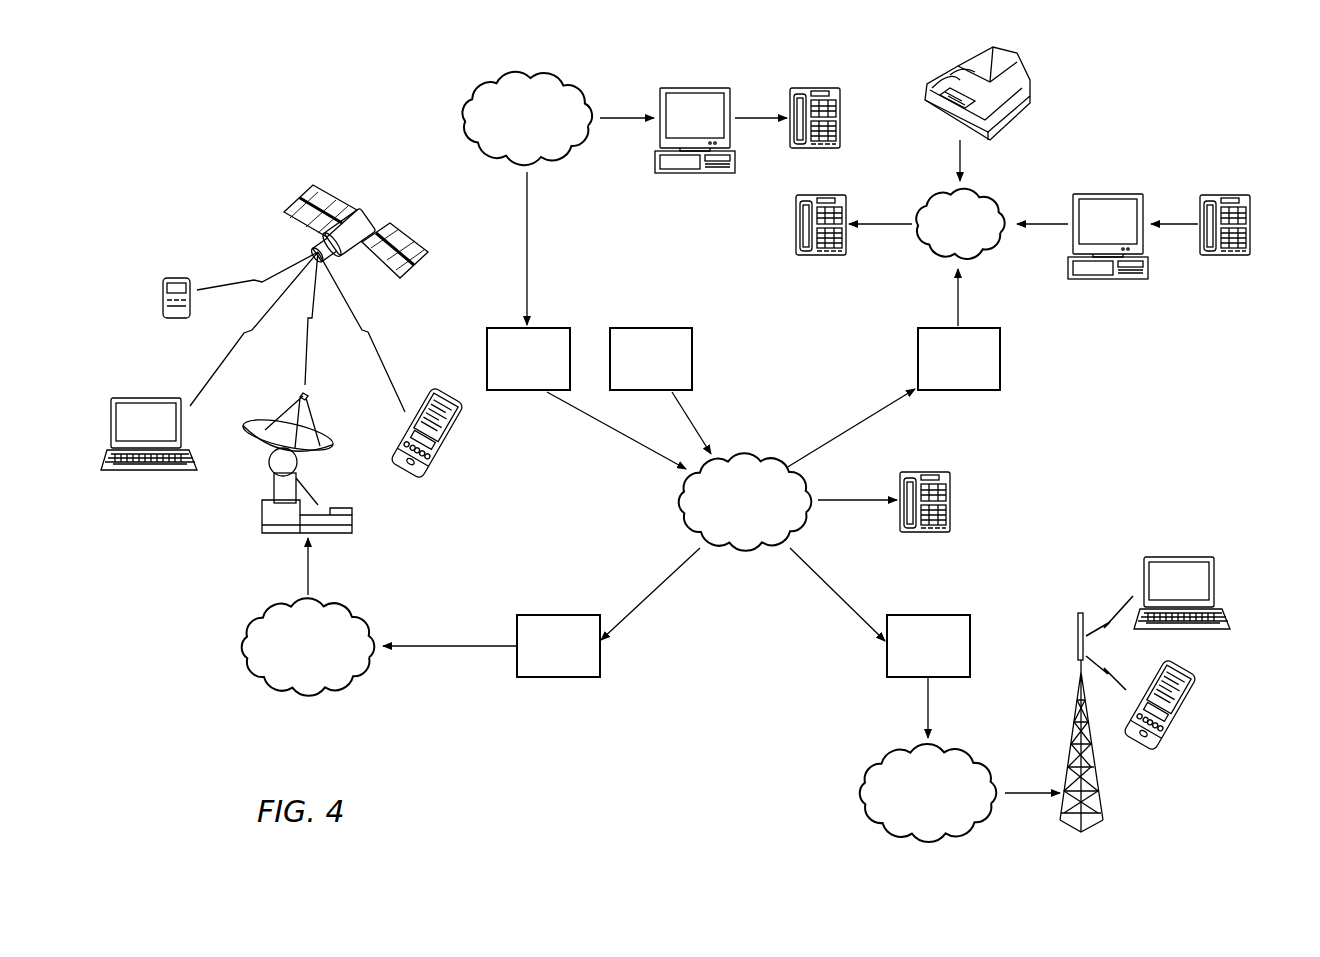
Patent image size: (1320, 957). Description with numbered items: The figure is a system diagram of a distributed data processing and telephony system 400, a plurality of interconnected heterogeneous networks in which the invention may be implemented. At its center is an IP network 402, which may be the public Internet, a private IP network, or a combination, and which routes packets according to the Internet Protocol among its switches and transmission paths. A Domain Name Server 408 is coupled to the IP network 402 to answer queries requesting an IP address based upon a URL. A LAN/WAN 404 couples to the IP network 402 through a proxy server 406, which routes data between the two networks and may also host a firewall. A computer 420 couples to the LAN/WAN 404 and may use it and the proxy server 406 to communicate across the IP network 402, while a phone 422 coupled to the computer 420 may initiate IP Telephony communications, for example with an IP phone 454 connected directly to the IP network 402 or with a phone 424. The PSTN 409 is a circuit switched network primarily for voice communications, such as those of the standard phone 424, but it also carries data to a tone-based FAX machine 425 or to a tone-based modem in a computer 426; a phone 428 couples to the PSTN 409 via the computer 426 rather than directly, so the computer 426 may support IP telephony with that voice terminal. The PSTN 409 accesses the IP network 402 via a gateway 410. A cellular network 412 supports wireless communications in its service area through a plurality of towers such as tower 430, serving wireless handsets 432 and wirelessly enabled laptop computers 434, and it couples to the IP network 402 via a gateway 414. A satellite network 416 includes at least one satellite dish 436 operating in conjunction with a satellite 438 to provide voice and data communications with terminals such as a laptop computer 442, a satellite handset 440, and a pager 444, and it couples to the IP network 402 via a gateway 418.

The distributed data processing system 400 is at (314, 138).
The IP network 402 is at (674, 502).
The LAN/WAN 404 is at (458, 118).
The proxy server 406 is at (506, 326).
The Domain Name Server 408 is at (652, 326).
The PSTN 409 is at (995, 262).
The gateway 410 is at (1002, 358).
The cellular network 412 is at (930, 846).
The gateway 414 is at (972, 648).
The satellite network 416 is at (310, 701).
The gateway 418 is at (556, 679).
The computer 420 is at (702, 86).
The phone 422 is at (822, 86).
The phone 424 is at (794, 222).
The FAX machine 425 is at (1032, 90).
The computer 426 is at (1110, 192).
The phone 428 is at (1252, 222).
The tower 430 is at (1094, 830).
The wireless handset 432 is at (1160, 754).
The wirelessly enabled laptop computer 434 is at (1182, 555).
The satellite dish 436 is at (262, 528).
The satellite 438 is at (372, 210).
The satellite handset 440 is at (428, 481).
The laptop computer 442 is at (152, 473).
The pager 444 is at (162, 296).
The IP phone 454 is at (952, 500).